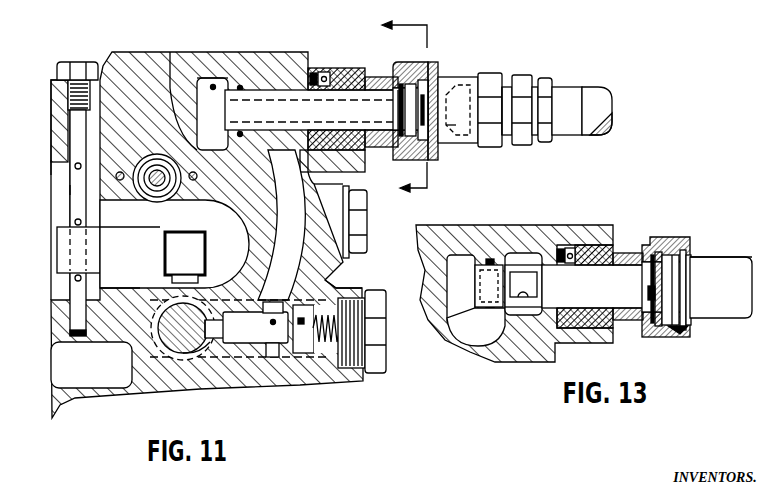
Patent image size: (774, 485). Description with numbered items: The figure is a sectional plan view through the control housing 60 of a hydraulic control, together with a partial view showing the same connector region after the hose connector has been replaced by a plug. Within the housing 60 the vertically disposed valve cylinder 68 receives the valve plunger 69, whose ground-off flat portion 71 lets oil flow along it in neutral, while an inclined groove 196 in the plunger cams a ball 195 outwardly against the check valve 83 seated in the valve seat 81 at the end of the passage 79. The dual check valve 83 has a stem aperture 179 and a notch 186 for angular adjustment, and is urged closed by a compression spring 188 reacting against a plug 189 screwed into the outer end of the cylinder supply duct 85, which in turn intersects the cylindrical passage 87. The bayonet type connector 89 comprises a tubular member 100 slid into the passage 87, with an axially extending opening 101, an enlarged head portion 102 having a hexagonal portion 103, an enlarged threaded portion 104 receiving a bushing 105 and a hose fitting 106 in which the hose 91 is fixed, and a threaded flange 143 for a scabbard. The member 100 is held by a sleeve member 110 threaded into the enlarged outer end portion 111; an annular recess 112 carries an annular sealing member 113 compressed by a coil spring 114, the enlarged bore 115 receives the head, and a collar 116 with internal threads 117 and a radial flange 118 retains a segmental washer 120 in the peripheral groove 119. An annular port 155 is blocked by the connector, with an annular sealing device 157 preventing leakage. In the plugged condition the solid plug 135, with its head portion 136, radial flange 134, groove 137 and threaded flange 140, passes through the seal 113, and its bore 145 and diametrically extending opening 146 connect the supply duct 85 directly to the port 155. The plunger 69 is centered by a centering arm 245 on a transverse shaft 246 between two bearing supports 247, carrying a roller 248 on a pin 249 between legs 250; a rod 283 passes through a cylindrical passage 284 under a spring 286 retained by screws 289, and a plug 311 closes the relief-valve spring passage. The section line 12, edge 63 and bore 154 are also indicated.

In FIG. 11, the section line 12 is at (402, 106).
In FIG. 11, the control housing 60 is at (130, 52).
In FIG. 11, the plate edge 63 is at (54, 168).
In FIG. 11, the valve cylinder 68 is at (206, 335).
In FIG. 11, the valve plunger 69 is at (247, 312).
In FIG. 11, the flat portion 71 is at (150, 287).
In FIG. 11, the passage 79 is at (272, 357).
In FIG. 11, the valve seat 81 is at (303, 354).
In FIG. 11, the check valve 83 is at (272, 319).
In FIG. 11, the cylinder supply duct 85 is at (287, 242).
In FIG. 13, the cylinder supply duct 85 is at (488, 362).
In FIG. 11, the cylindrical passage 87 is at (228, 127).
In FIG. 13, the cylindrical passage 87 is at (487, 300).
In FIG. 11, the bayonet type connector 89 is at (481, 66).
In FIG. 11, the hose 91 is at (597, 95).
In FIG. 11, the tubular member 100 is at (270, 95).
In FIG. 11, the axially extending opening 101 is at (256, 158).
In FIG. 11, the head portion 102 is at (448, 82).
In FIG. 11, the hexagonal portion 103 is at (487, 145).
In FIG. 11, the enlarged portion 104 is at (453, 140).
In FIG. 11, the bushing 105 is at (523, 145).
In FIG. 11, the hose fitting 106 is at (548, 85).
In FIG. 11, the bayonet-receiving sleeve member 110 is at (375, 77).
In FIG. 13, the bayonet-receiving sleeve member 110 is at (622, 255).
In FIG. 11, the enlarged outer end portion 111 is at (327, 68).
In FIG. 13, the enlarged outer end portion 111 is at (572, 247).
In FIG. 11, the annular recess 112 is at (343, 76).
In FIG. 13, the annular recess 112 is at (588, 330).
In FIG. 11, the annular sealing member 113 is at (350, 76).
In FIG. 13, the annular sealing member 113 is at (598, 250).
In FIG. 11, the coil spring 114 is at (314, 72).
In FIG. 13, the coil spring 114 is at (560, 248).
In FIG. 11, the enlarged bore 115 is at (405, 98).
In FIG. 13, the enlarged bore 115 is at (652, 274).
In FIG. 11, the collar 116 is at (412, 66).
In FIG. 13, the collar 116 is at (663, 240).
In FIG. 11, the internal threads 117 is at (332, 162).
In FIG. 11, the radial flange 118 is at (433, 62).
In FIG. 13, the radial flange 118 is at (690, 260).
In FIG. 11, the peripheral groove 119 is at (440, 132).
In FIG. 11, the segmental washer 120 is at (412, 160).
In FIG. 13, the segmental washer 120 is at (688, 318).
In FIG. 13, the radial flange 134 is at (681, 334).
In FIG. 13, the solid plug 135 is at (563, 290).
In FIG. 13, the head portion 136 is at (730, 312).
In FIG. 13, the groove 137 is at (680, 280).
In FIG. 13, the threaded flange 140 is at (648, 296).
In FIG. 11, the threaded flange 143 is at (393, 95).
In FIG. 13, the bore 145 is at (492, 315).
In FIG. 13, the diametrically extending opening 146 is at (524, 298).
In FIG. 11, the bore 154 is at (215, 82).
In FIG. 11, the annular port 155 is at (225, 95).
In FIG. 13, the annular port 155 is at (515, 257).
In FIG. 13, the annular sealing device 157 is at (488, 270).
In FIG. 11, the aperture 179 is at (217, 322).
In FIG. 11, the notch 186 is at (345, 285).
In FIG. 11, the compression spring 188 is at (352, 345).
In FIG. 11, the plug 189 is at (384, 342).
In FIG. 11, the ball 195 is at (172, 350).
In FIG. 11, the inclined groove 196 is at (203, 350).
In FIG. 11, the centering arm 245 is at (95, 255).
In FIG. 11, the transverse shaft 246 is at (100, 183).
In FIG. 11, the bearing support 247 is at (62, 140).
In FIG. 11, the roller 248 is at (170, 263).
In FIG. 11, the pin 249 is at (172, 238).
In FIG. 11, the legs 250 is at (200, 232).
In FIG. 11, the rod 283 is at (158, 190).
In FIG. 11, the cylindrical passage 284 is at (148, 188).
In FIG. 11, the compression spring 286 is at (70, 188).
In FIG. 11, the screws 289 is at (80, 203).
In FIG. 11, the plug 311 is at (362, 232).